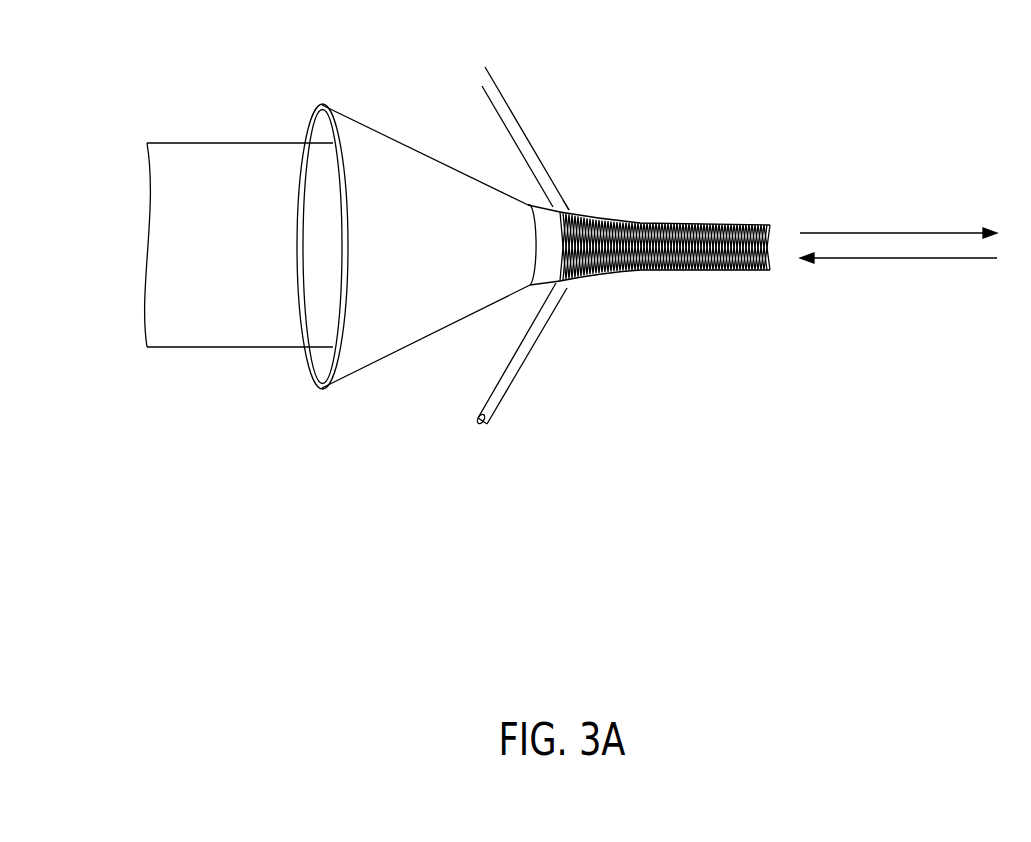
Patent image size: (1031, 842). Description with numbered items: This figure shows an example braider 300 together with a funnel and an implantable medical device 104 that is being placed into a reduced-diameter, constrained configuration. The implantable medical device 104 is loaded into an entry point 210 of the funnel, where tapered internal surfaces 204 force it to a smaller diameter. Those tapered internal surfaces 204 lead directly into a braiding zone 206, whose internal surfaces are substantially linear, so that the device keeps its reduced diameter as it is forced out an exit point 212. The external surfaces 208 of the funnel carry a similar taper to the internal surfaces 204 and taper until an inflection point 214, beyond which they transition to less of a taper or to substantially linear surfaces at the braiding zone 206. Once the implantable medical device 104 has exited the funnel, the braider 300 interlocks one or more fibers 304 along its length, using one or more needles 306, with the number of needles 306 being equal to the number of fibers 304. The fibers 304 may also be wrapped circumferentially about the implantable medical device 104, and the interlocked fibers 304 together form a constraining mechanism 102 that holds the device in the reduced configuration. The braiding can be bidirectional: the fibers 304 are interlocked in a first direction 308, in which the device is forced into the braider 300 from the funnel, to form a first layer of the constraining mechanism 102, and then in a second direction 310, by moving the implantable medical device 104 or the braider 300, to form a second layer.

The implantable medical device 104 is at (205, 348).
The internal surfaces 204 is at (308, 373).
The external surfaces 208 is at (433, 335).
The entry point 210 is at (297, 235).
The constraining mechanism 102 is at (606, 285).
The exit point 212 is at (638, 223).
The inflection point 214 is at (524, 182).
The braiding zone 206 is at (543, 183).
The fibers 304 is at (498, 407).
The needles 306 is at (482, 427).
The braider 300 is at (493, 475).
The first direction 308 is at (877, 230).
The second direction 310 is at (900, 260).